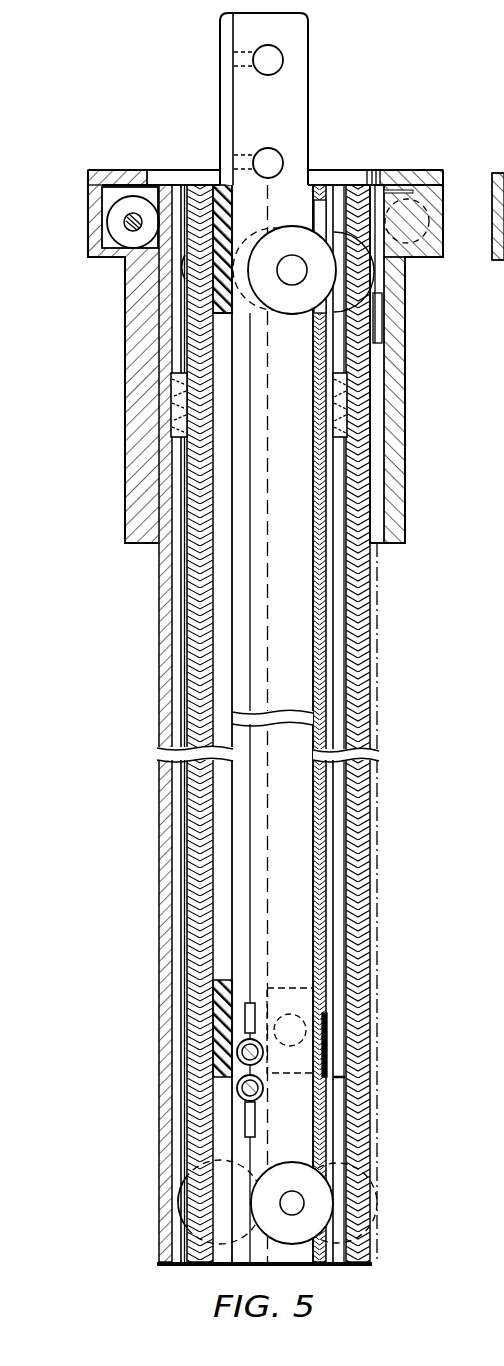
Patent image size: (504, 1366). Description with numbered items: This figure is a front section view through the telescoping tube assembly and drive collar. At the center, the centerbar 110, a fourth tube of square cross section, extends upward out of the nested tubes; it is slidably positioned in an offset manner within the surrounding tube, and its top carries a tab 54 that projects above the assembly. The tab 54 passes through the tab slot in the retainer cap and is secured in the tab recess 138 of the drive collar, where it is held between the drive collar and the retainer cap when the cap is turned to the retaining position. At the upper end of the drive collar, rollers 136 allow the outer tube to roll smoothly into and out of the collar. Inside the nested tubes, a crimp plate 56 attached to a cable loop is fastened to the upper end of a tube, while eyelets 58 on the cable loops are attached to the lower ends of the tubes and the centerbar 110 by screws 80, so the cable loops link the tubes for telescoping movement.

The centerbar 110 is at (310, 47).
The tab 54 is at (402, 182).
The tab recess 138 is at (443, 185).
The rollers 136 is at (118, 225).
The crimp plate 56 is at (170, 437).
The eyelets 58 is at (240, 1103).
The screws 80 is at (237, 1083).